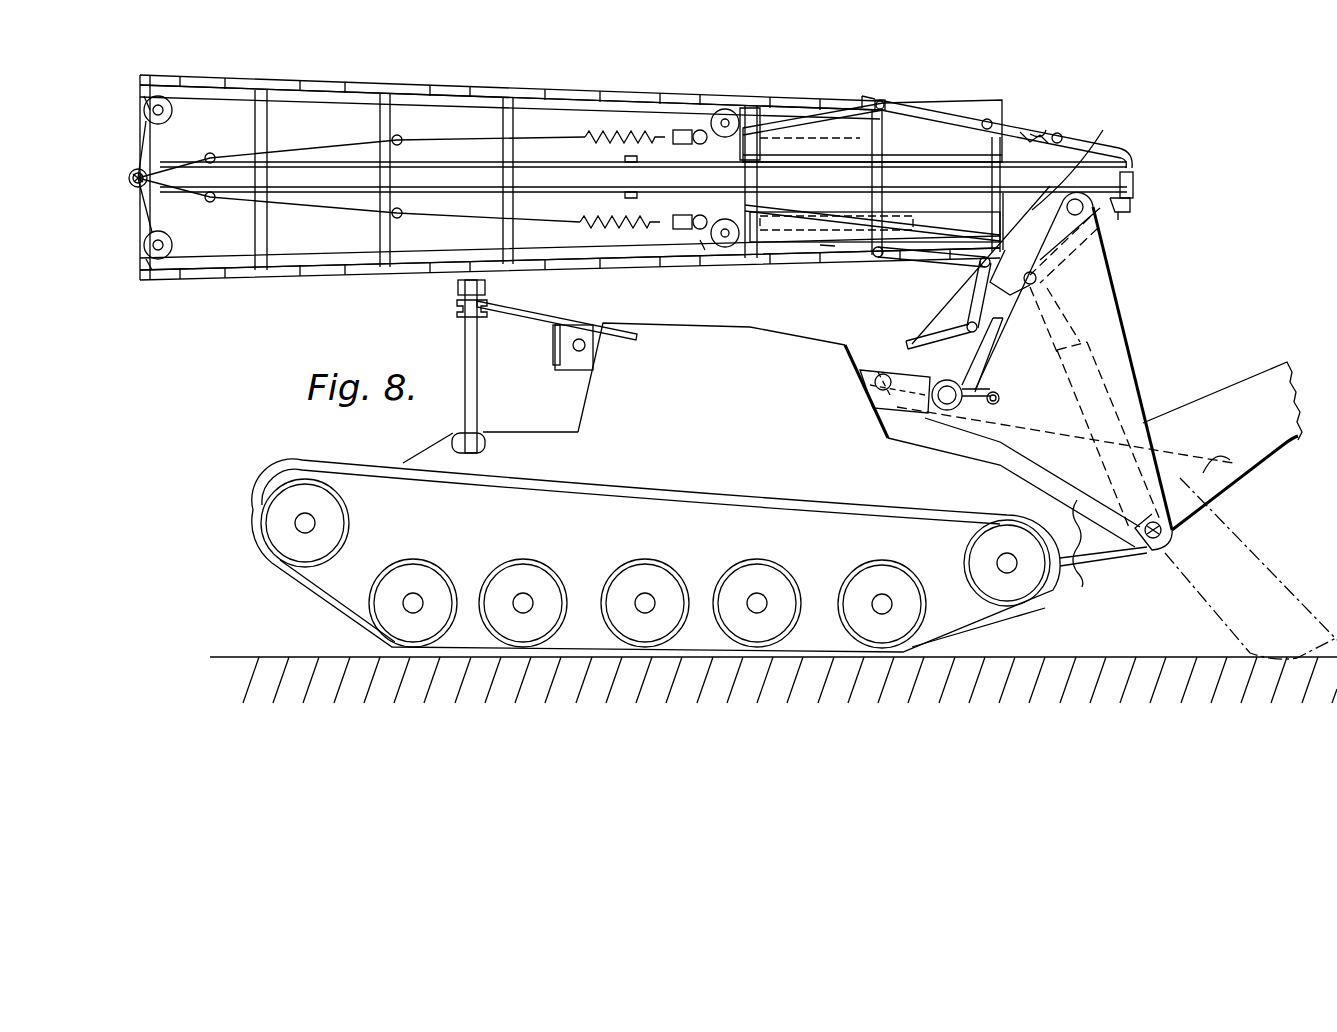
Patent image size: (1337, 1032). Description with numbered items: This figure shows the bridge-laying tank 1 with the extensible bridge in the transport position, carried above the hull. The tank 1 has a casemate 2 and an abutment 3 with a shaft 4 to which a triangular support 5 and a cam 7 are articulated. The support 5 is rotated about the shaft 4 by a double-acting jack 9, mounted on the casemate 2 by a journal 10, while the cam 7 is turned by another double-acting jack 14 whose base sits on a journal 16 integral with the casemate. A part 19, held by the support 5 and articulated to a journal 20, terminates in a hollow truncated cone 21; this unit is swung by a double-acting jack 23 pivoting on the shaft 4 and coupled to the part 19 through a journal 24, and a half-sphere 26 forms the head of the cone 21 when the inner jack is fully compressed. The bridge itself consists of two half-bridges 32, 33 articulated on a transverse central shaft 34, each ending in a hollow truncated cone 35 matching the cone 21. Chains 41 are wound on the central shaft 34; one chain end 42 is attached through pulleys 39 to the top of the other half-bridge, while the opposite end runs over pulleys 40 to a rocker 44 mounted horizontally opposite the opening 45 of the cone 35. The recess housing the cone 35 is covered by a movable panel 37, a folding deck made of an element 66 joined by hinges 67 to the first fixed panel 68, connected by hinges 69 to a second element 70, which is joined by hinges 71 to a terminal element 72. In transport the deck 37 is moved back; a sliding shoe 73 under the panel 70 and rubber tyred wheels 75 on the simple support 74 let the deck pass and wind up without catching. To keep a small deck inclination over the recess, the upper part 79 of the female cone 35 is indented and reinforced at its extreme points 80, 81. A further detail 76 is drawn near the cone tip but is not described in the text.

The tank 1 is at (328, 575).
The casemate 2 is at (624, 393).
The abutment 3 is at (1100, 572).
The shaft 4 is at (1148, 540).
The triangular support 5 is at (1106, 266).
The cam 7 is at (1225, 395).
The double-acting jack 9 is at (882, 413).
The journal 10 is at (575, 370).
The double-acting jack 14 is at (935, 428).
The journal 16 is at (862, 389).
The part 19 is at (1105, 160).
The journal 20 is at (1125, 180).
The hollow truncated cone 21 is at (875, 224).
The double-acting jack 23 is at (1102, 350).
The journal 24 is at (1056, 286).
The half-sphere 26 is at (702, 250).
The half-bridge 32 is at (652, 268).
The half-bridge 33 is at (470, 79).
The transverse central shaft 34 is at (134, 186).
The hollow truncated cone 35 is at (781, 125).
The movable panel 37 is at (1077, 124).
The pulleys 39 is at (168, 120).
The pulleys 40 is at (727, 108).
The chains 41 is at (356, 93).
The chain end 42 is at (172, 100).
The rocker 44 is at (682, 128).
The opening 45 is at (750, 108).
The element 66 is at (945, 264).
The hinges 67 is at (881, 99).
The first fixed panel 68 is at (826, 255).
The hinges 69 is at (984, 119).
The second element 70 is at (968, 306).
The hinges 71 is at (1057, 133).
The terminal element 72 is at (912, 342).
The sliding shoe 73 is at (1027, 136).
The simple support 74 is at (1000, 397).
The rubber tyred wheels 75 is at (985, 375).
The hook 76 is at (1135, 220).
The upper part 79 is at (896, 118).
The extreme point 80 is at (1028, 133).
The extreme point 81 is at (870, 97).